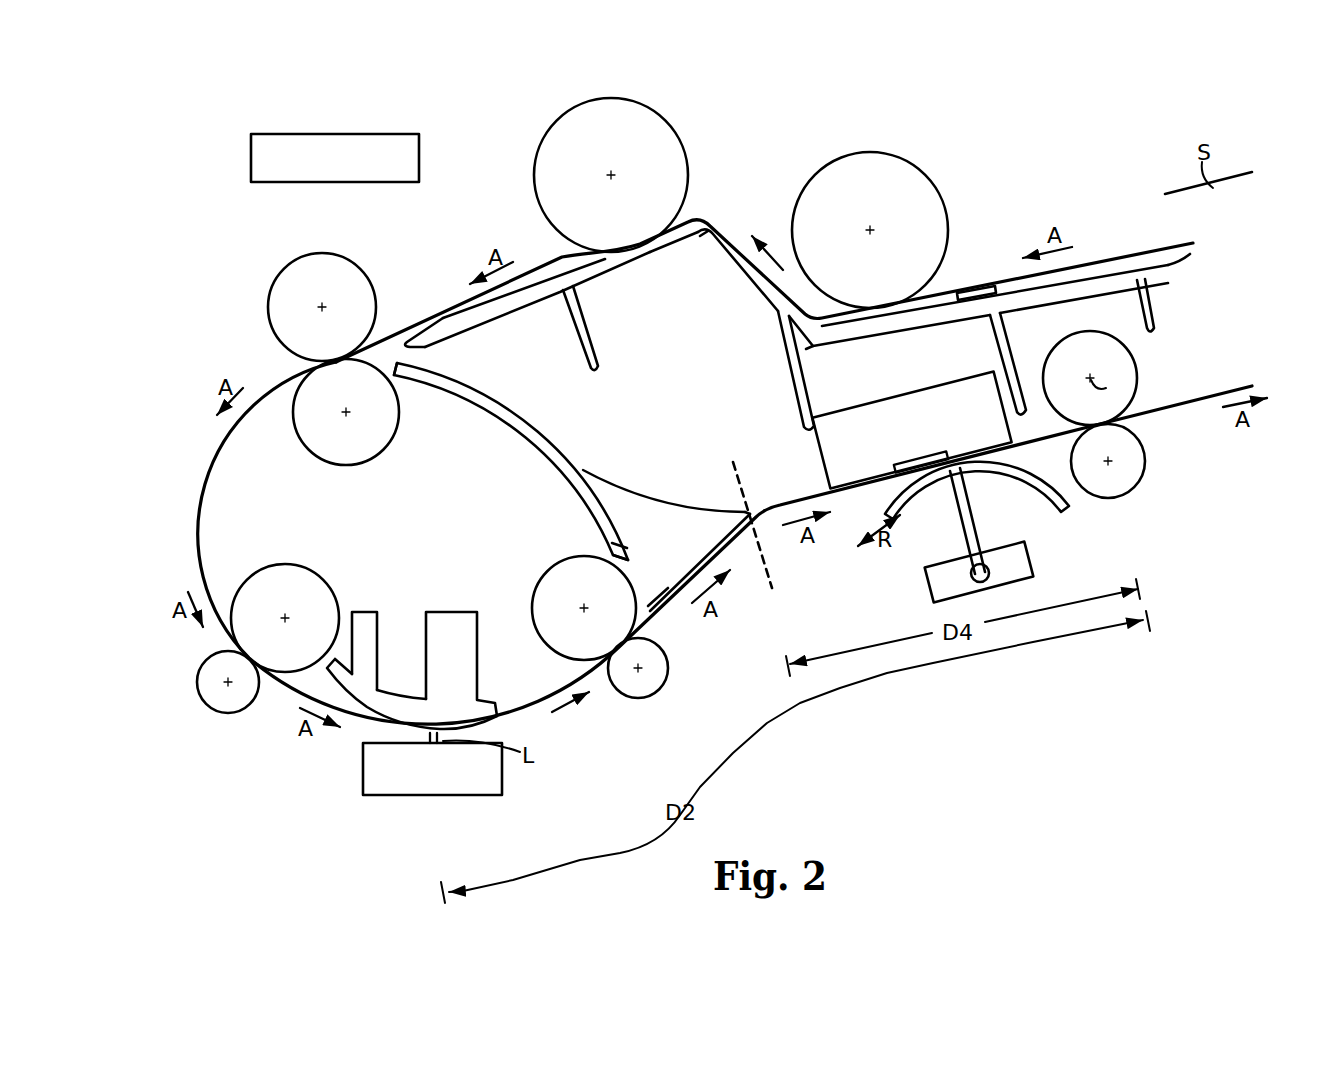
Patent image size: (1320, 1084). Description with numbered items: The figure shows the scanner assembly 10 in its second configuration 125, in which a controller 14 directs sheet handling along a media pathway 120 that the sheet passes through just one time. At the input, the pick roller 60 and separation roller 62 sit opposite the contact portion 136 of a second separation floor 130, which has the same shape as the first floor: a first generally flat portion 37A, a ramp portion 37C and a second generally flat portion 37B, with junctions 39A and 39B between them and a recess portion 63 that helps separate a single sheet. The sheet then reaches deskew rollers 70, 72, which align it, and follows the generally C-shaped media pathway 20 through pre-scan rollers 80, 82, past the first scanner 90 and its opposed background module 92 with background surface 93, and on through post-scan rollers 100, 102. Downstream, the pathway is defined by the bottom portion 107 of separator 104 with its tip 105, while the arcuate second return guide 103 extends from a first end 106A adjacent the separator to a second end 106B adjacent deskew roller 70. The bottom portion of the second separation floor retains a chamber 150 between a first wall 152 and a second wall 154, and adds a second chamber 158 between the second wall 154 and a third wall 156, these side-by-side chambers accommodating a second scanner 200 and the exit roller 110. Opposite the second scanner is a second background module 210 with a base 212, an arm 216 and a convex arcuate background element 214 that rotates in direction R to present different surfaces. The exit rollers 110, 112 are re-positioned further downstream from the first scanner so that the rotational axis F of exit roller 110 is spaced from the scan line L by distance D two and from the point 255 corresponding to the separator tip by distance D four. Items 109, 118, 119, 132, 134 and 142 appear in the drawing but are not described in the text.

The scanner assembly 10 is at (477, 150).
The controller 14 is at (356, 134).
The media pathway 20 is at (594, 670).
The first generally flat portion 37A is at (952, 298).
The second generally flat portion 37B is at (550, 272).
The ramp portion 37C is at (738, 243).
The junction 39A is at (811, 340).
The junction 39B is at (705, 247).
The pick roller 60 is at (892, 153).
The separation roller 62 is at (677, 133).
The recess portion 63 is at (642, 259).
The deskew roller 70 is at (355, 452).
The deskew roller 72 is at (313, 275).
The pre-scan roller 80 is at (310, 592).
The pre-scan roller 82 is at (222, 703).
The first scanner 90 is at (364, 778).
The background module 92 is at (453, 620).
The background surface 93 is at (407, 718).
The post-scan roller 100 is at (537, 603).
The post-scan roller 102 is at (652, 697).
The second return guide 103 is at (540, 440).
The separator 104 is at (678, 551).
The tip 105 is at (732, 513).
The first end 106A is at (610, 545).
The second end 106B is at (420, 384).
The bottom portion 107 is at (665, 584).
The deflector 109 is at (643, 493).
The exit roller 110 is at (1130, 376).
The exit roller 112 is at (1138, 480).
The exit path 118 is at (1036, 200).
The sheet direction 119 is at (1212, 426).
The media pathway 120 is at (717, 220).
The second configuration 125 is at (798, 126).
The second separation floor 130 is at (1160, 295).
The guide lip 132 is at (1182, 264).
The plate tip 134 is at (413, 347).
The contact portion 136 is at (990, 289).
The guide plate 142 is at (528, 298).
The chamber 150 is at (883, 367).
The first wall 152 is at (777, 361).
The second wall 154 is at (993, 351).
The third wall 156 is at (1143, 304).
The chamber 158 is at (1048, 337).
The second scanner 200 is at (925, 405).
The second background module 210 is at (927, 594).
The base 212 is at (1034, 562).
The background element 214 is at (917, 486).
The arm 216 is at (975, 533).
The point 255 is at (762, 542).